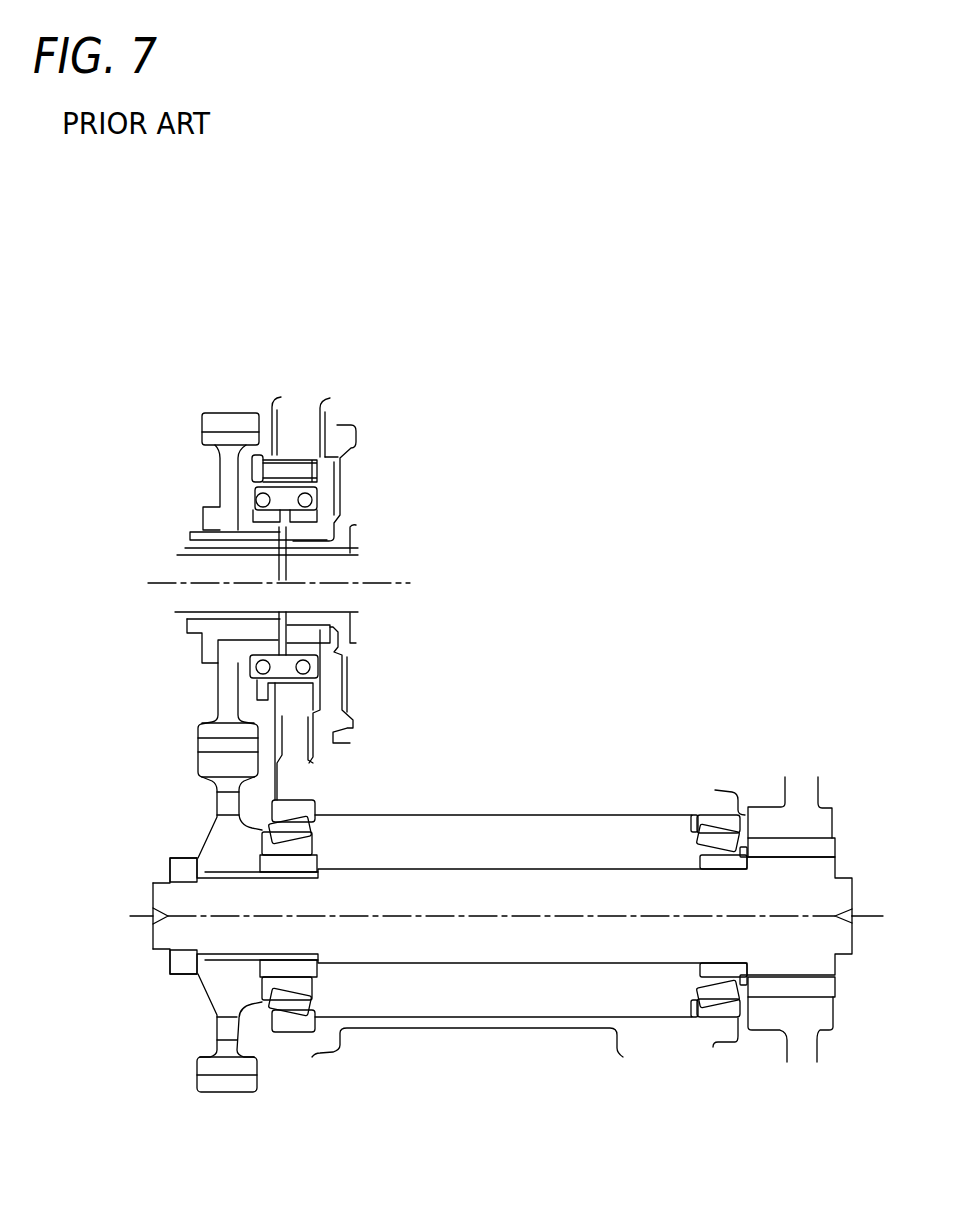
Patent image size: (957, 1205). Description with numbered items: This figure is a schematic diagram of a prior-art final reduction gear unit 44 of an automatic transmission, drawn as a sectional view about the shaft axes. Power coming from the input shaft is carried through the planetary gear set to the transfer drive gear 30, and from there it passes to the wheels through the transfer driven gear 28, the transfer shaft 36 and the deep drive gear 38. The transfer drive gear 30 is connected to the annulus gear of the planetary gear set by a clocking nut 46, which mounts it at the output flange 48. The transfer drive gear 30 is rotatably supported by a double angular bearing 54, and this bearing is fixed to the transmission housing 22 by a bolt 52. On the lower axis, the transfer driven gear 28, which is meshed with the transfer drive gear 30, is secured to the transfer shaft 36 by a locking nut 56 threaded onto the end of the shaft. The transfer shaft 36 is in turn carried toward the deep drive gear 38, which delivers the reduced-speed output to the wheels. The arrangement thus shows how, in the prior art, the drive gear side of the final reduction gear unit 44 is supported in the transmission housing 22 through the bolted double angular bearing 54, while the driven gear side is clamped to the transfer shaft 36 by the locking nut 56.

The transmission housing 22 is at (330, 423).
The transfer drive gear 30 is at (208, 435).
The bolt 52 is at (257, 470).
The double angular bearing 54 is at (307, 488).
The output flange 48 is at (350, 455).
The clocking nut 46 is at (202, 650).
The final reduction gear unit 44 is at (462, 687).
The transfer shaft 36 is at (448, 875).
The locking nut 56 is at (175, 862).
The transfer driven gear 28 is at (227, 1067).
The deep drive gear 38 is at (803, 1050).